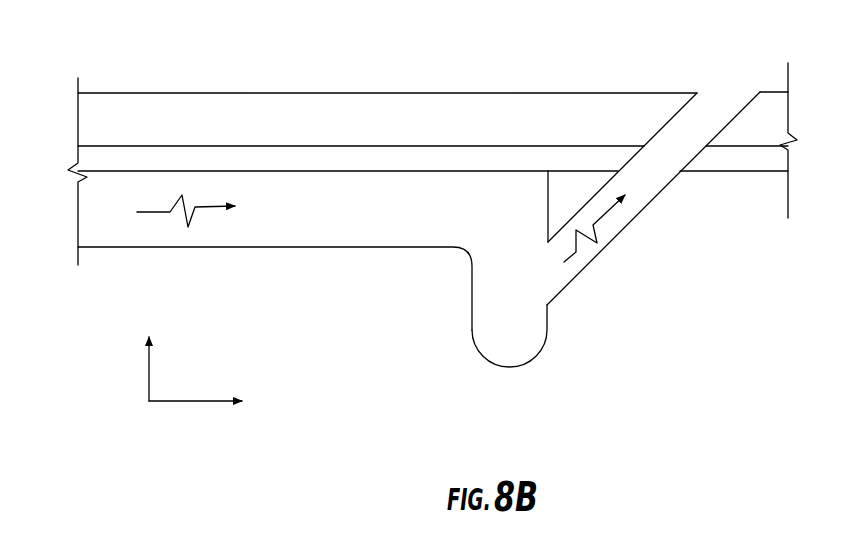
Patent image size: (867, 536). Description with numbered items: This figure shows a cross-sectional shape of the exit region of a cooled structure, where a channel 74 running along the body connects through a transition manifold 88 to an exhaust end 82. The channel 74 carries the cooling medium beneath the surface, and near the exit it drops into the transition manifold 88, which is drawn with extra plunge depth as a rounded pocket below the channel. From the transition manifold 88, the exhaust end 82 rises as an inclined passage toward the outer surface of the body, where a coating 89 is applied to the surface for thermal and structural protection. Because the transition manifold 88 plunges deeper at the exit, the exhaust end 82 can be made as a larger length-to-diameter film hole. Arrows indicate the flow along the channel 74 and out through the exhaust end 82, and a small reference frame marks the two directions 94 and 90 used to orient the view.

The coating 89 is at (152, 103).
The exhaust end 82 is at (717, 107).
The channel 74 is at (135, 230).
The transition manifold 88 is at (480, 323).
The vertical direction axis 94 is at (149, 383).
The horizontal direction axis 90 is at (198, 402).